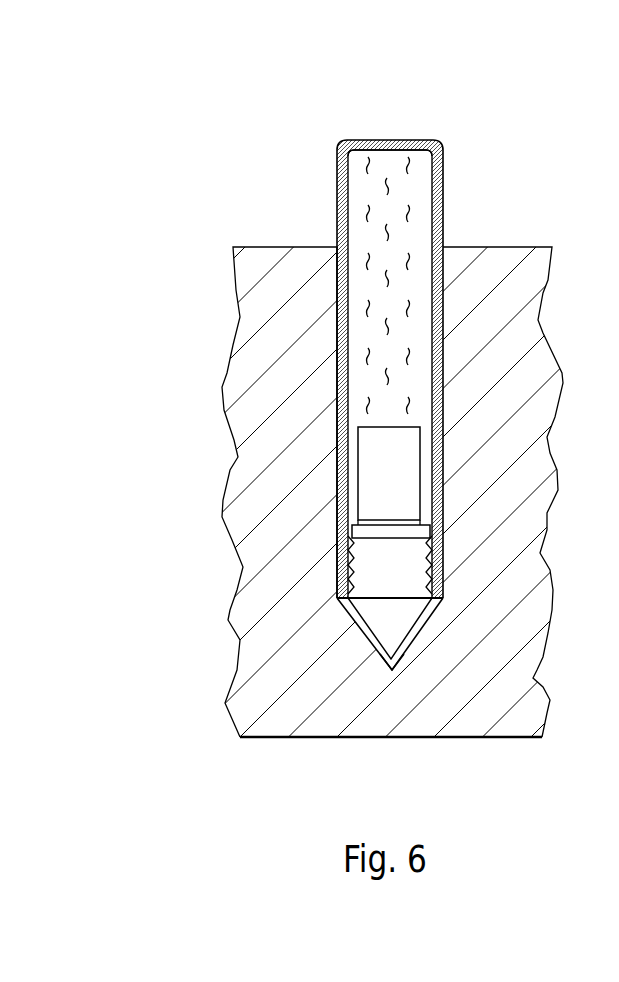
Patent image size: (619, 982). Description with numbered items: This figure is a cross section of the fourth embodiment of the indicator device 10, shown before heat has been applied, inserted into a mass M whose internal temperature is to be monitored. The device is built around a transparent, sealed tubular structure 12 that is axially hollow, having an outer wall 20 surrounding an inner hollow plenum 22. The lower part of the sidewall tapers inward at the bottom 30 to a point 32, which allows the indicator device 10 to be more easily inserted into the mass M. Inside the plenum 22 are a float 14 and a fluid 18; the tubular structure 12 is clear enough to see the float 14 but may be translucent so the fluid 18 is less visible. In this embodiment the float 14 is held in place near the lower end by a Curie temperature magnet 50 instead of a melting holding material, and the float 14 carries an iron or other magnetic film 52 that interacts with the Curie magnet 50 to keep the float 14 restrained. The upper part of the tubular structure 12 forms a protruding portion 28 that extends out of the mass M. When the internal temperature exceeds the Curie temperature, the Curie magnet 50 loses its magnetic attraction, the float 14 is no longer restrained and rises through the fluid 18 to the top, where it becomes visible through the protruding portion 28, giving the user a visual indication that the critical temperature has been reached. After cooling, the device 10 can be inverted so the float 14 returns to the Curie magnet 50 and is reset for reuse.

The indicator device 10 is at (280, 104).
The tubular structure 12 is at (337, 213).
The float 14 is at (373, 440).
The fluid 18 is at (407, 358).
The outer wall 20 is at (337, 320).
The inner hollow plenum 22 is at (360, 383).
The protruding portion 28 is at (417, 188).
The bottom 30 is at (418, 637).
The point 32 is at (391, 668).
The Curie temperature magnet 50 is at (350, 527).
The magnetic film 52 is at (447, 527).
The mass M is at (277, 727).